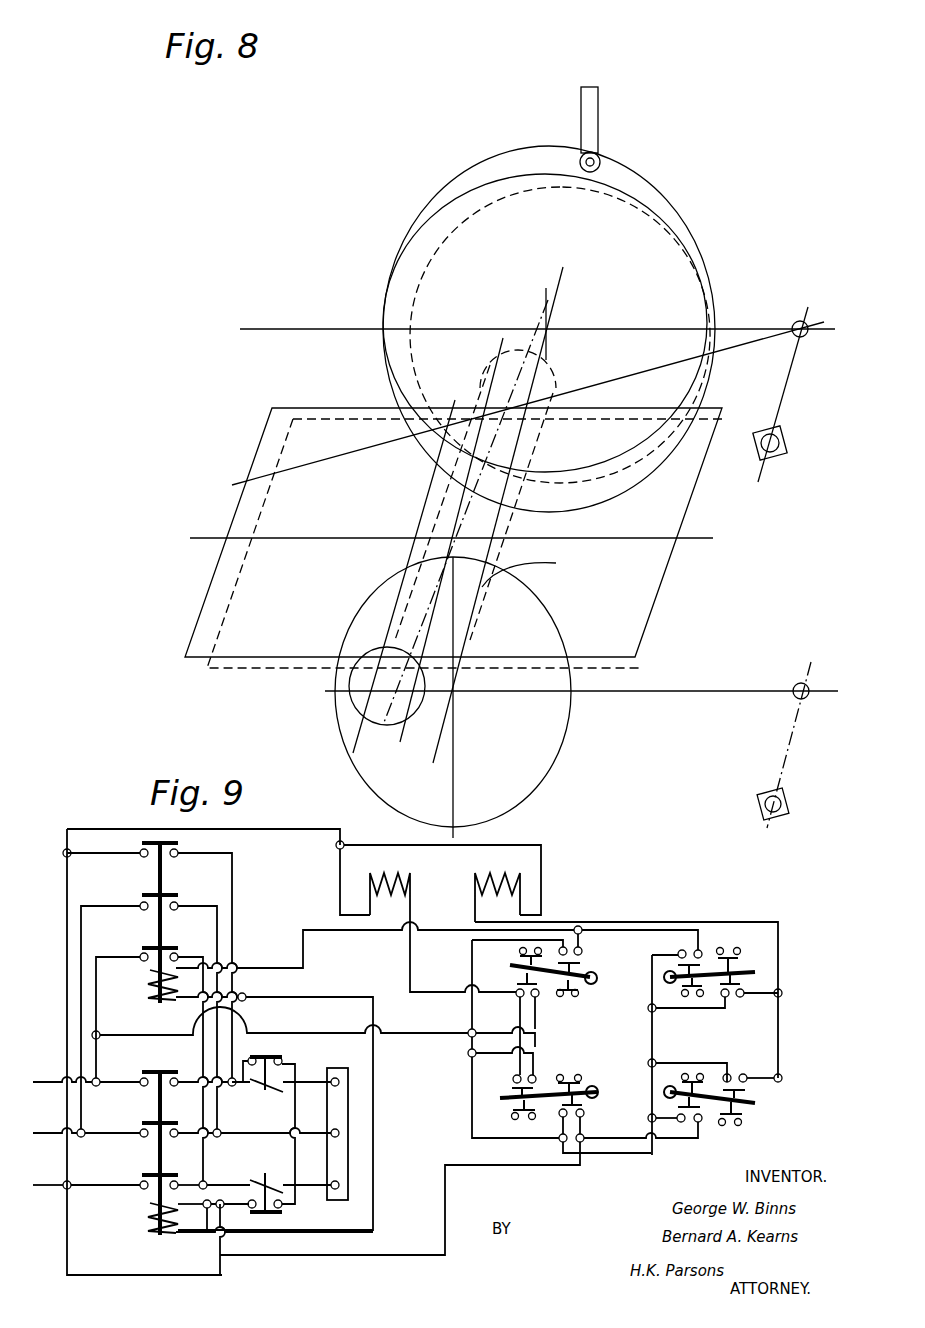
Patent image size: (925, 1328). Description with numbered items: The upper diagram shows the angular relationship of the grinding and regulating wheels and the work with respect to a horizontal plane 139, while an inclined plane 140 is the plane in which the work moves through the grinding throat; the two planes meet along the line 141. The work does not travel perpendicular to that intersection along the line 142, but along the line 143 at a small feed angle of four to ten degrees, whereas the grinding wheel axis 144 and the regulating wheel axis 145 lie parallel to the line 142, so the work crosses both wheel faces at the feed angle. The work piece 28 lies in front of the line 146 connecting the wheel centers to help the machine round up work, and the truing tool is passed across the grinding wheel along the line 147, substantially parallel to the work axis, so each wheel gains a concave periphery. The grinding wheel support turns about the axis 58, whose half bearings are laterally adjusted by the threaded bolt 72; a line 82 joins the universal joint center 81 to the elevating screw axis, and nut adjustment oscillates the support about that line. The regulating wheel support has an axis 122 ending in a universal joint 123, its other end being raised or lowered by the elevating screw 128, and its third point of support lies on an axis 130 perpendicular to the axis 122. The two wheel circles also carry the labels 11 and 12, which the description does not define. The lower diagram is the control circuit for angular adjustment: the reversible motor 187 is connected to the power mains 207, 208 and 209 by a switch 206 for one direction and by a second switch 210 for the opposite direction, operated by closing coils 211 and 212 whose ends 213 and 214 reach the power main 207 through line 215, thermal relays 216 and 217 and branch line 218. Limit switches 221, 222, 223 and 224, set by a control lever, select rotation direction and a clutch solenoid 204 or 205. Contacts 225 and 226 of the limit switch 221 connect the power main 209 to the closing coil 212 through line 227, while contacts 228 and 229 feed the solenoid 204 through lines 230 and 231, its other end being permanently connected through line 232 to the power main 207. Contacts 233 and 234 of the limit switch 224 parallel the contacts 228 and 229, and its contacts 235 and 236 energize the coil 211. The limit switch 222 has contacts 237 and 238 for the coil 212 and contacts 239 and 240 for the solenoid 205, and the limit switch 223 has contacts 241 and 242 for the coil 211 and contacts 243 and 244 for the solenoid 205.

In FIG. 8, the drum 11 is at (700, 254).
In FIG. 8, the lower drum 12 is at (550, 757).
In FIG. 8, the work piece 28 is at (418, 517).
In FIG. 8, the axis 58 is at (793, 381).
In FIG. 8, the threaded bolt 72 is at (783, 447).
In FIG. 8, the center of the universal joint 81 is at (810, 313).
In FIG. 8, the line 82 is at (735, 348).
In FIG. 8, the axis 122 is at (790, 747).
In FIG. 8, the universal joint 123 is at (808, 684).
In FIG. 8, the elevating screw 128 is at (788, 806).
In FIG. 8, the axis 130 is at (718, 680).
In FIG. 8, the horizontal plane 139 is at (207, 606).
In FIG. 8, the inclined plane 140 is at (250, 507).
In FIG. 8, the line of intersection 141 is at (225, 540).
In FIG. 8, the line 142 is at (400, 733).
In FIG. 8, the line 143 is at (523, 470).
In FIG. 8, the grinding wheel axis 144 is at (548, 322).
In FIG. 8, the regulating wheel axis 145 is at (433, 761).
In FIG. 8, the line 146 is at (534, 570).
In FIG. 8, the line 147 is at (590, 160).
In FIG. 9, the motor 187 is at (350, 1107).
In FIG. 9, the operating solenoid 204 is at (400, 875).
In FIG. 9, the operating solenoid 205 is at (508, 862).
In FIG. 9, the switch 206 is at (157, 1100).
In FIG. 9, the power main 207 is at (45, 1186).
In FIG. 9, the power main 208 is at (45, 1134).
In FIG. 9, the power main 209 is at (45, 1083).
In FIG. 9, the second switch 210 is at (165, 880).
In FIG. 9, the closing coil 211 is at (146, 1220).
In FIG. 9, the closing coil 212 is at (146, 988).
In FIG. 9, the end of closing coil 213 is at (190, 1236).
In FIG. 9, the end of closing coil 214 is at (190, 1004).
In FIG. 9, the line 215 is at (235, 1022).
In FIG. 9, the thermal relay 216 is at (268, 1050).
In FIG. 9, the thermal relay 217 is at (272, 1218).
In FIG. 9, the branch line 218 is at (222, 1275).
In FIG. 9, the limit switch 221 is at (585, 975).
In FIG. 9, the limit switch 222 is at (757, 972).
In FIG. 9, the limit switch 223 is at (757, 1104).
In FIG. 9, the limit switch 224 is at (500, 1105).
In FIG. 9, the contact 225 is at (563, 947).
In FIG. 9, the contact 226 is at (580, 947).
In FIG. 9, the line 227 is at (318, 923).
In FIG. 9, the contact 228 is at (518, 998).
In FIG. 9, the contact 229 is at (540, 1000).
In FIG. 9, the line 230 is at (400, 1038).
In FIG. 9, the line 231 is at (408, 957).
In FIG. 9, the line 232 is at (337, 866).
In FIG. 9, the contact 233 is at (516, 1076).
In FIG. 9, the contact 234 is at (534, 1076).
In FIG. 9, the contact 235 is at (552, 1150).
In FIG. 9, the contact 236 is at (586, 1124).
In FIG. 9, the contact 237 is at (682, 950).
In FIG. 9, the contact 238 is at (700, 950).
In FIG. 9, the contact 239 is at (722, 997).
In FIG. 9, the contact 240 is at (741, 997).
In FIG. 9, the contact 241 is at (681, 1122).
In FIG. 9, the contact 242 is at (700, 1122).
In FIG. 9, the contact 243 is at (730, 1076).
In FIG. 9, the contact 244 is at (746, 1077).